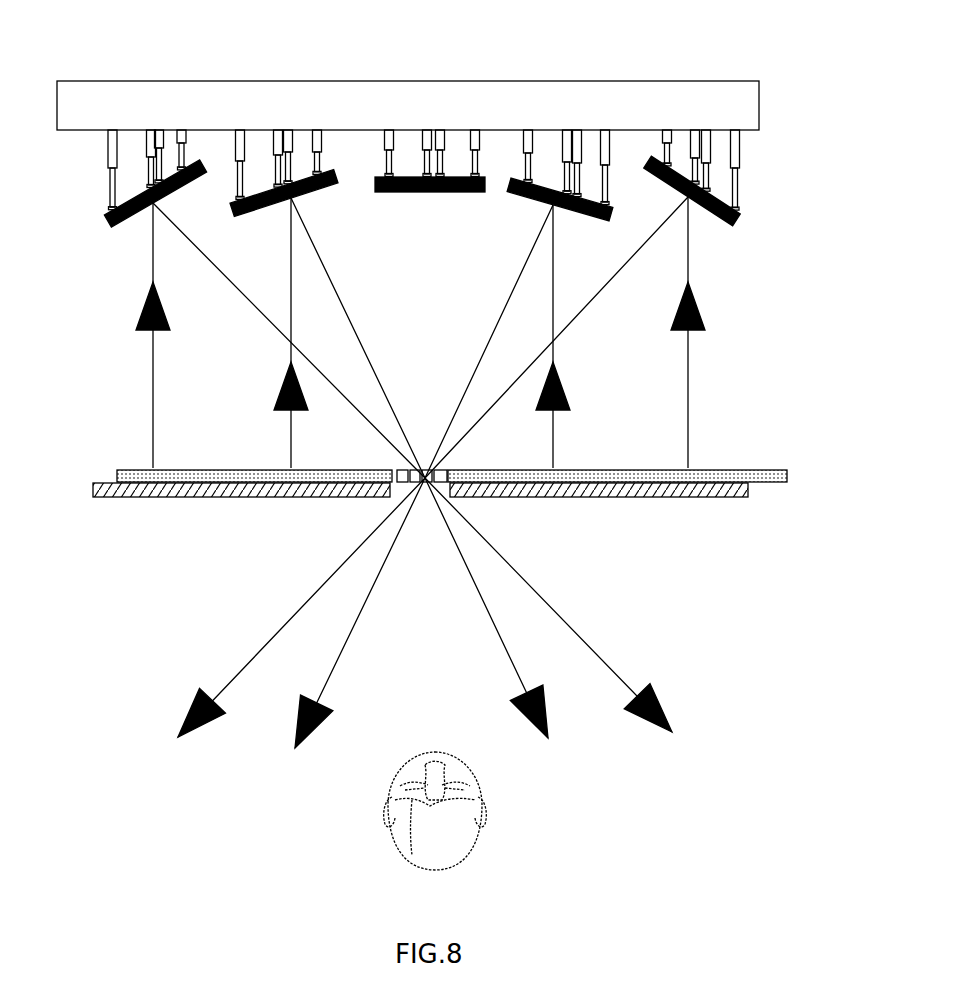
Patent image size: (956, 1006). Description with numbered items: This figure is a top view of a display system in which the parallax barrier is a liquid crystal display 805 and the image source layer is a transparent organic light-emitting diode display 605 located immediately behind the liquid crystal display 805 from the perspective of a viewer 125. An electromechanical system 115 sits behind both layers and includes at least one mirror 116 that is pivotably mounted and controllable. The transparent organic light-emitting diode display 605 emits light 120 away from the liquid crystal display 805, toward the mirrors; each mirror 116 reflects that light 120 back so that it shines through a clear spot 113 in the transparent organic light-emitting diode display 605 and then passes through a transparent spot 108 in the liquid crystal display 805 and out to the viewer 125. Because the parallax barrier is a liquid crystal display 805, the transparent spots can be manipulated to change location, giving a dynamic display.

The electromechanical system 115 is at (505, 100).
The mirror 116 is at (715, 215).
The light 120 is at (553, 445).
The transparent spot 108 is at (425, 490).
The clear spot 113 is at (392, 470).
The transparent organic light-emitting diode display 605 is at (765, 472).
The liquid crystal display 805 is at (735, 497).
The viewer 125 is at (462, 847).